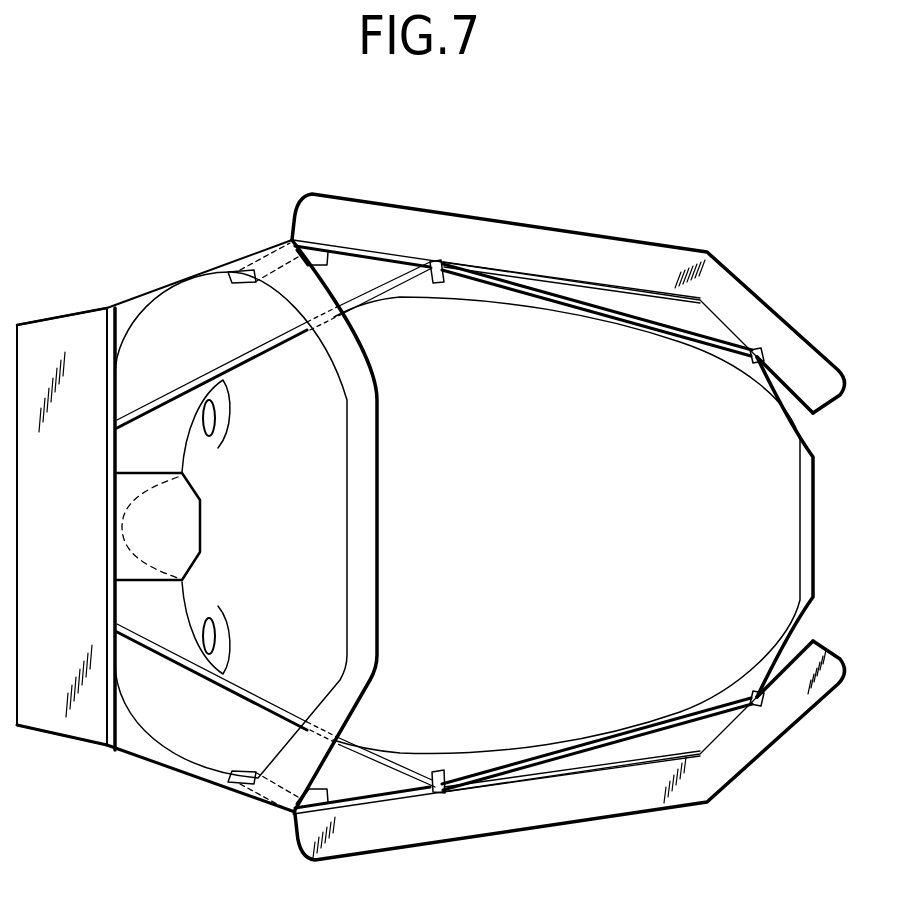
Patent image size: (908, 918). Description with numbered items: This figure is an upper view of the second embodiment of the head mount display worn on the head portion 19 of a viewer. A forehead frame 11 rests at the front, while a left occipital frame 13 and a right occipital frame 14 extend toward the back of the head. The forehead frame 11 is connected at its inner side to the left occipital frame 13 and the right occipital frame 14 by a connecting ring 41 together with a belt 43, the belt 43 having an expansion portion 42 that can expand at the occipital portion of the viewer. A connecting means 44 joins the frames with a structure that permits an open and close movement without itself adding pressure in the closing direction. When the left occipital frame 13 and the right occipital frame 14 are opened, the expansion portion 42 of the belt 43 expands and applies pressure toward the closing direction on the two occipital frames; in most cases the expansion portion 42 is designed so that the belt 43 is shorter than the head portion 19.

The forehead frame 11 is at (367, 523).
The left occipital frame 13 is at (368, 808).
The right occipital frame 14 is at (355, 247).
The head portion of a viewer 19 is at (768, 558).
The connecting ring 41 is at (440, 258).
The expansion portion 42 is at (818, 488).
The belt 43 is at (612, 318).
The connecting means 44 is at (230, 281).